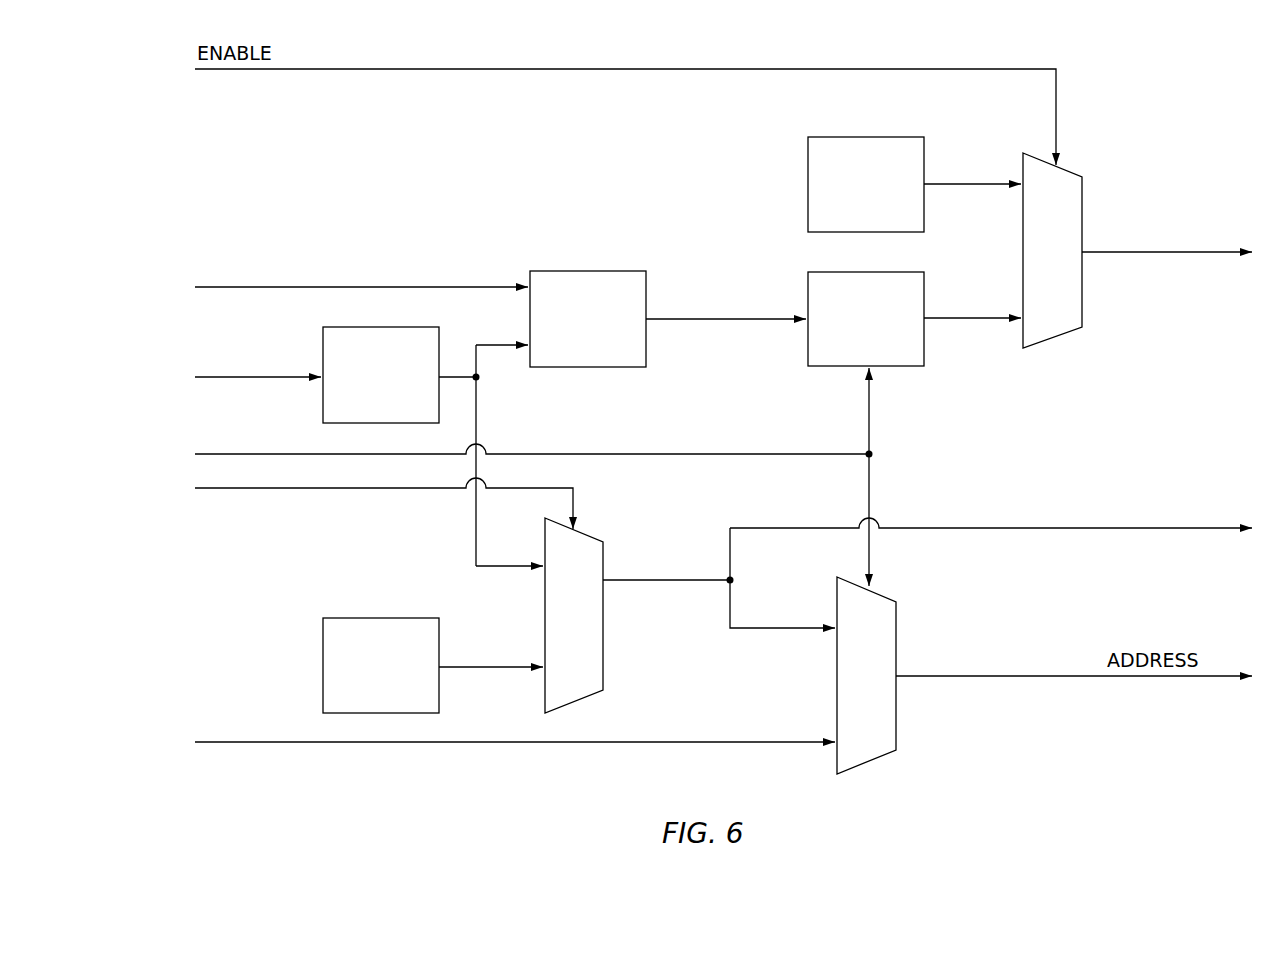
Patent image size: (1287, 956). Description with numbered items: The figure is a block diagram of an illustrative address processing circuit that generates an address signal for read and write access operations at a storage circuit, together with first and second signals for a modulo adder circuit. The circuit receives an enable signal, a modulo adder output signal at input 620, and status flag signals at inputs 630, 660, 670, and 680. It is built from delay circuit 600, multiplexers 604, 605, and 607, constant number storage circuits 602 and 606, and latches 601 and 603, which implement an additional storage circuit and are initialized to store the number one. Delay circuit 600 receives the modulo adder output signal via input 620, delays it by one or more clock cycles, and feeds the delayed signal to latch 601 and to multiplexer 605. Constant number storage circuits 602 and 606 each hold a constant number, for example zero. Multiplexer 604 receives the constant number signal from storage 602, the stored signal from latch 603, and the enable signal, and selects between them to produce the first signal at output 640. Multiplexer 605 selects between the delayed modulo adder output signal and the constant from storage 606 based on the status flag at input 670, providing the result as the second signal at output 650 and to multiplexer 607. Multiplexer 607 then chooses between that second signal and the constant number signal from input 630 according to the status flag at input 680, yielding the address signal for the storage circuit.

The delay circuit 600 is at (381, 327).
The latch 601 is at (588, 271).
The constant number storage circuit 602 is at (866, 137).
The latch 603 is at (924, 350).
The multiplexer 604 is at (1082, 297).
The multiplexer 605 is at (603, 660).
The constant number storage circuit 606 is at (381, 618).
The multiplexer 607 is at (896, 723).
The input 620 is at (260, 376).
The input 630 is at (260, 743).
The output 640 is at (1142, 251).
The output 650 is at (1142, 528).
The input 660 is at (260, 286).
The input 670 is at (260, 489).
The input 680 is at (260, 453).